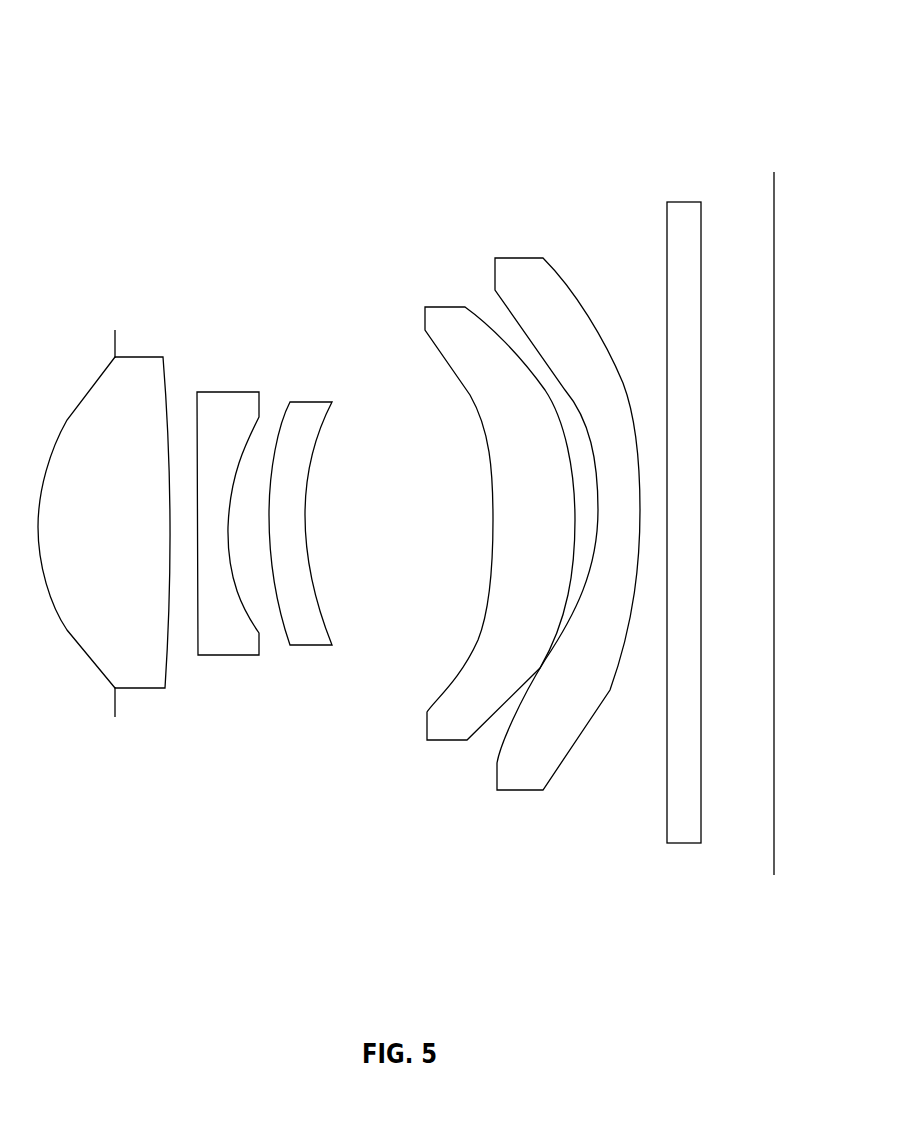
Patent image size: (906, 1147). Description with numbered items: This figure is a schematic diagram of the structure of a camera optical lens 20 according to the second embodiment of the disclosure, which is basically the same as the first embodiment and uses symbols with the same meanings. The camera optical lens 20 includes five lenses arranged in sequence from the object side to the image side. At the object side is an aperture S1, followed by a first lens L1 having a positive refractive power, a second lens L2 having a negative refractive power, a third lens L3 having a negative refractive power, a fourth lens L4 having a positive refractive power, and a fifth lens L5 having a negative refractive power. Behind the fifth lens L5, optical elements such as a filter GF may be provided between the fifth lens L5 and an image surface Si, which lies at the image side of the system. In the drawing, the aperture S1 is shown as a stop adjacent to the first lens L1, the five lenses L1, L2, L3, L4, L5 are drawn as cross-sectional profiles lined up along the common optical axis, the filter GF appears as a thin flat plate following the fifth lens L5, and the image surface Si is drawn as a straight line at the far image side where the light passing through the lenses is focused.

The camera optical lens 20 is at (434, 58).
The aperture S1 is at (116, 509).
The first lens L1 is at (104, 509).
The second lens L2 is at (228, 513).
The third lens L3 is at (300, 512).
The fourth lens L4 is at (500, 511).
The fifth lens L5 is at (567, 513).
The filter GF is at (684, 509).
The image surface Si is at (772, 513).